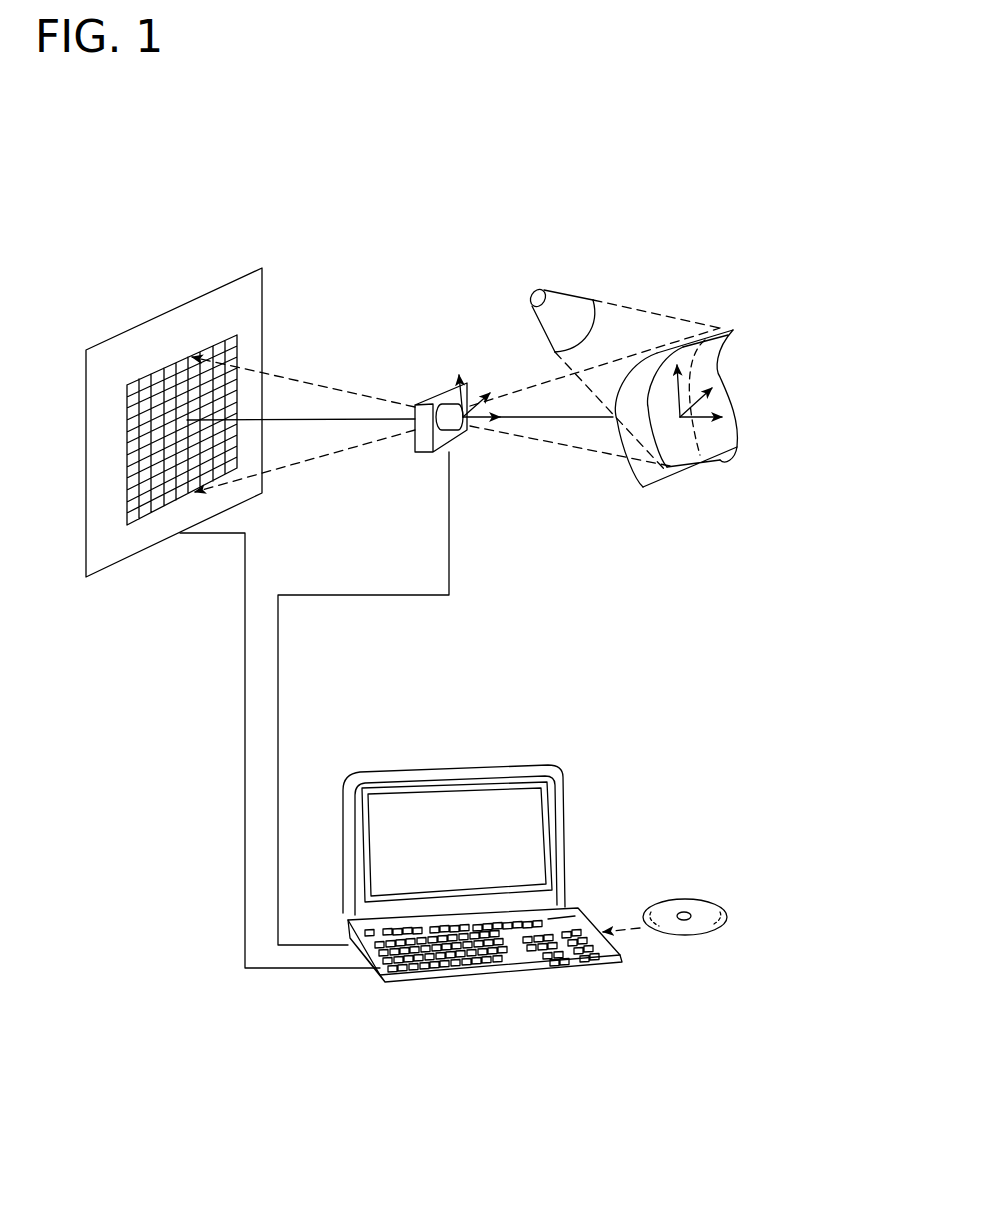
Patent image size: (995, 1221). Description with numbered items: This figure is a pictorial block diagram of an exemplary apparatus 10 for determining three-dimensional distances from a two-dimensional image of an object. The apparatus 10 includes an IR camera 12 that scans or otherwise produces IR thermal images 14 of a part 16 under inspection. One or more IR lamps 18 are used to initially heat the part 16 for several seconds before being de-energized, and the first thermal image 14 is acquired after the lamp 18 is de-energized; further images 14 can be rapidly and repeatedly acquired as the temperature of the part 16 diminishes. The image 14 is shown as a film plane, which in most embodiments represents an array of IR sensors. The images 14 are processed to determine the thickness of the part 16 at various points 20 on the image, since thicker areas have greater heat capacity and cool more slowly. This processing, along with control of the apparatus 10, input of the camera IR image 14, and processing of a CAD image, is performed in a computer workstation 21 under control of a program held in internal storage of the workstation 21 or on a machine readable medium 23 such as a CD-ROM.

The apparatus 10 is at (642, 132).
The IR camera 12 is at (417, 402).
The IR image 14 is at (336, 618).
The part 16 is at (643, 485).
The IR lamp 18 is at (565, 292).
The points 20 is at (178, 402).
The computer workstation 21 is at (612, 947).
The machine readable medium 23 is at (712, 903).